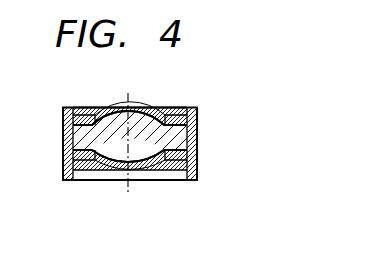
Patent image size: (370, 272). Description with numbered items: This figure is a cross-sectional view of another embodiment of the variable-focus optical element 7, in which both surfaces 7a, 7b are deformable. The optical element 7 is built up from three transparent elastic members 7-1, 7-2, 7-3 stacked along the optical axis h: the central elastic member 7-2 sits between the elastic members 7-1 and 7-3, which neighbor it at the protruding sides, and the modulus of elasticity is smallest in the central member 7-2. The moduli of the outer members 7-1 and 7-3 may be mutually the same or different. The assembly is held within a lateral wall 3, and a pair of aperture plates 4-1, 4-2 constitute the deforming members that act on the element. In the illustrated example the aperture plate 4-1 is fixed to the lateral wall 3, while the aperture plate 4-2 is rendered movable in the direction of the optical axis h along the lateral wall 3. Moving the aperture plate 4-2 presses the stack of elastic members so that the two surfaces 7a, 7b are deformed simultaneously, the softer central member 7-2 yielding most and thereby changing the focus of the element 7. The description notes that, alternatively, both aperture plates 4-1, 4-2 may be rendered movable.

The lateral wall 3 is at (63, 139).
The aperture plate 4-1 is at (87, 107).
The aperture plate 4-2 is at (84, 172).
The variable-focus optical element 7 is at (257, 113).
The transparent elastic member 7-1 is at (188, 121).
The transparent elastic member 7-2 is at (183, 142).
The transparent elastic member 7-3 is at (188, 162).
The surface 7a is at (155, 108).
The surface 7b is at (139, 170).
The optical axis h is at (130, 156).